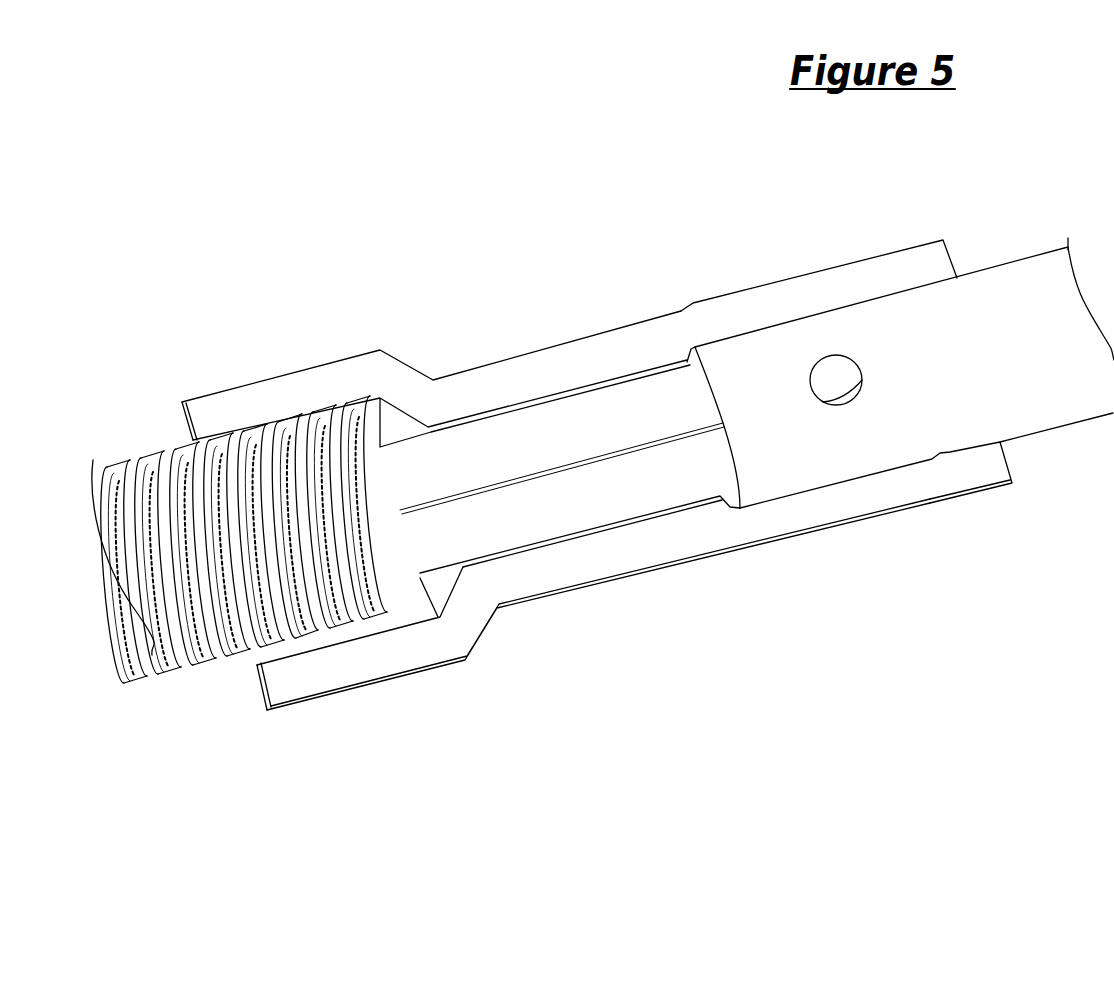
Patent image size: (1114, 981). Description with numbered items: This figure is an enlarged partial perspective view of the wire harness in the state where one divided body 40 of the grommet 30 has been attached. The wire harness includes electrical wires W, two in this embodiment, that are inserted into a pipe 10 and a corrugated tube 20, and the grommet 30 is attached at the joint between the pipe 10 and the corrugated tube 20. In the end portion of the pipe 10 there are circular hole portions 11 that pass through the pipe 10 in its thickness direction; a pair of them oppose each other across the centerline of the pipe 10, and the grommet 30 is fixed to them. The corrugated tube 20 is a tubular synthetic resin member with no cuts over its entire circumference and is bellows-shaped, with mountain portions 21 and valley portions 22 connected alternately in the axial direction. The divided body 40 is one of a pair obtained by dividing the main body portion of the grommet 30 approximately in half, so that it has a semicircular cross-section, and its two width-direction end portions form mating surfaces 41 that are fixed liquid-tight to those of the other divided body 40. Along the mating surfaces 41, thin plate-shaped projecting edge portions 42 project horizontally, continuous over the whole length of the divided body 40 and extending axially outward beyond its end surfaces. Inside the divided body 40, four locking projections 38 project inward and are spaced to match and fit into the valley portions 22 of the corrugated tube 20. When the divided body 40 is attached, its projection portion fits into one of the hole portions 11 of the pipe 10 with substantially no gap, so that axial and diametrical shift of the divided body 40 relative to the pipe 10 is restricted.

The pipe 10 is at (904, 391).
The hole portion 11 is at (840, 373).
The corrugated tube 20 is at (241, 535).
The mountain portion 21 is at (246, 643).
The valley portion 22 is at (273, 520).
The grommet 30 is at (597, 453).
The locking projection 38 is at (363, 623).
The divided body 40 is at (597, 453).
The mating surface 41 is at (493, 380).
The projecting edge portion 42 is at (846, 275).
The electrical wire W is at (607, 492).